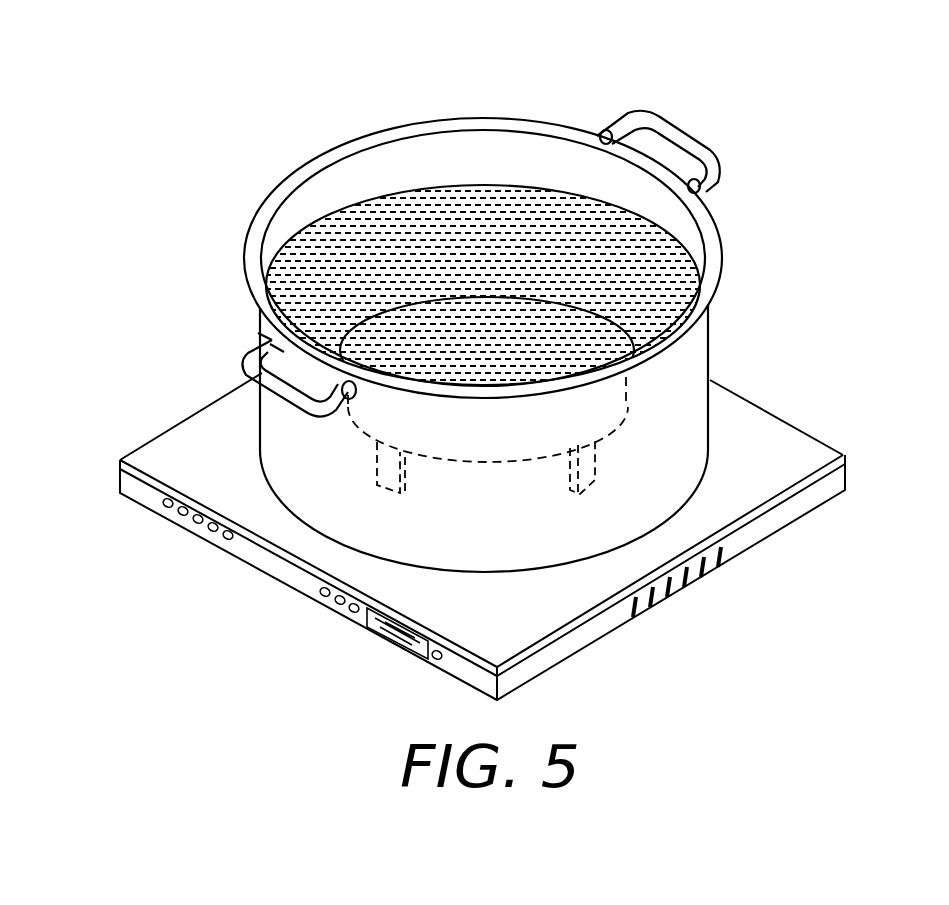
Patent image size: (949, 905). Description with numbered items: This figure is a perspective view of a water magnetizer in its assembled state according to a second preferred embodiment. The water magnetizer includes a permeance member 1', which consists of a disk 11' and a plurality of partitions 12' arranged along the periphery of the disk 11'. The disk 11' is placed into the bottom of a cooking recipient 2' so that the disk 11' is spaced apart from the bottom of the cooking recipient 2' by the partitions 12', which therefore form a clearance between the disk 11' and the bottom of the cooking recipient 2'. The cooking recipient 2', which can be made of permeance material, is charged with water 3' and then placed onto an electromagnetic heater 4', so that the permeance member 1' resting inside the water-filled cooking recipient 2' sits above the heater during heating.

The permeance member 1' is at (487, 281).
The cooking recipient 2' is at (532, 341).
The water 3' is at (483, 231).
The electromagnetic heater 4' is at (523, 536).
The disk 11' is at (581, 405).
The partitions 12' is at (576, 471).